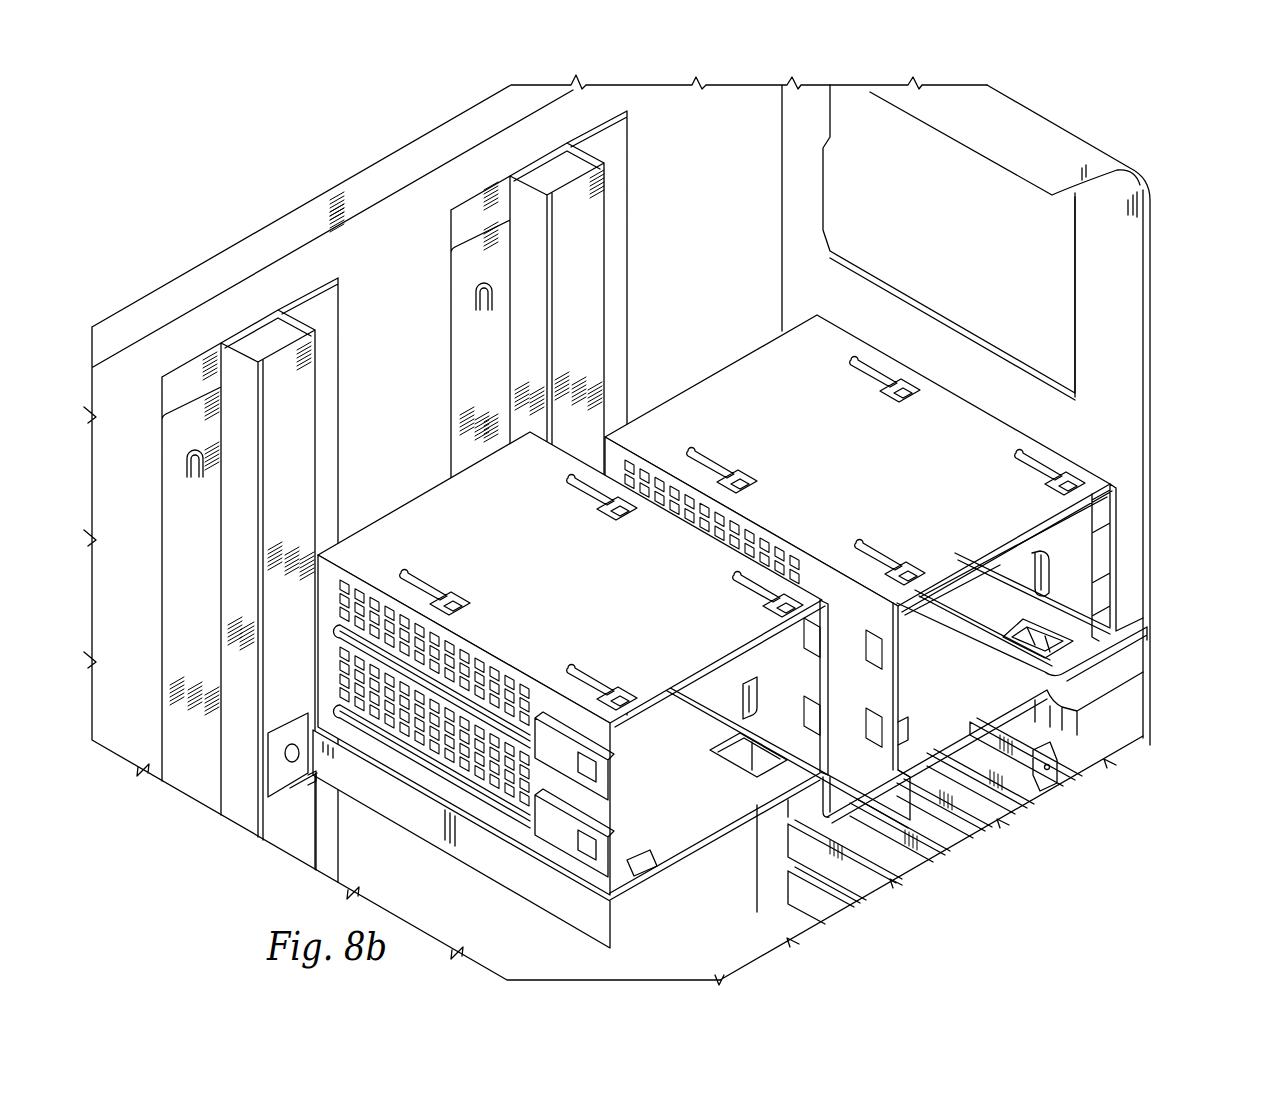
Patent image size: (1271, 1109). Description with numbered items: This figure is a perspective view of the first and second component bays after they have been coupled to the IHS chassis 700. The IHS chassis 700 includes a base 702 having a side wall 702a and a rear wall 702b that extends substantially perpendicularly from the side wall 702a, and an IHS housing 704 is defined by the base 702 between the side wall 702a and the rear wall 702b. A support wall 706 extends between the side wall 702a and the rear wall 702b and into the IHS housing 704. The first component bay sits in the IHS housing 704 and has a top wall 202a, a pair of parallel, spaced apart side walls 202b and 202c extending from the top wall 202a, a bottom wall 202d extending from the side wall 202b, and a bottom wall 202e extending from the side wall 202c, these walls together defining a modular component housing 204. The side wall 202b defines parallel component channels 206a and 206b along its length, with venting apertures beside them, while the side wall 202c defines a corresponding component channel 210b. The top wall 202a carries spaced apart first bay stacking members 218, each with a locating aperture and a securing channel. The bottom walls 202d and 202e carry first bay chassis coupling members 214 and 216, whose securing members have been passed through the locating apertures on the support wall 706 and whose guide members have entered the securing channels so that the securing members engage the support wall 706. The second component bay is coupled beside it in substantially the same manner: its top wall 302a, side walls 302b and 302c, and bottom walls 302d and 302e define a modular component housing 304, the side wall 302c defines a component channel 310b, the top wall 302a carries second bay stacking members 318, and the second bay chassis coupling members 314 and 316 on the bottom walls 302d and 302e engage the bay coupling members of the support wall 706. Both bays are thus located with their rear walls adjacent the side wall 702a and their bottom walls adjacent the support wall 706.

The IHS chassis 700 is at (658, 530).
The base 702 is at (658, 530).
The side wall 702a is at (736, 262).
The rear wall 702b is at (900, 327).
The IHS housing 704 is at (1097, 427).
The support wall 706 is at (676, 777).
The top wall 202a is at (592, 592).
The side wall 202b is at (333, 580).
The side wall 202c is at (828, 600).
The bottom wall 202d is at (652, 858).
The bottom wall 202e is at (763, 797).
The modular component housing 204 is at (589, 686).
The component channel 206a is at (527, 728).
The component channel 206b is at (413, 772).
The component channel 210b is at (744, 684).
The first bay chassis coupling member 214 is at (626, 848).
The first bay chassis coupling member 216 is at (727, 752).
The first bay stacking member 218 is at (568, 487).
The top wall 302a is at (878, 469).
The side wall 302b is at (618, 476).
The side wall 302c is at (1118, 490).
The bottom wall 302d is at (925, 746).
The bottom wall 302e is at (1073, 652).
The modular component housing 304 is at (946, 594).
The component channel 310b is at (1035, 556).
The second bay chassis coupling member 314 is at (905, 748).
The second bay chassis coupling member 316 is at (1005, 630).
The second bay stacking member 318 is at (852, 370).